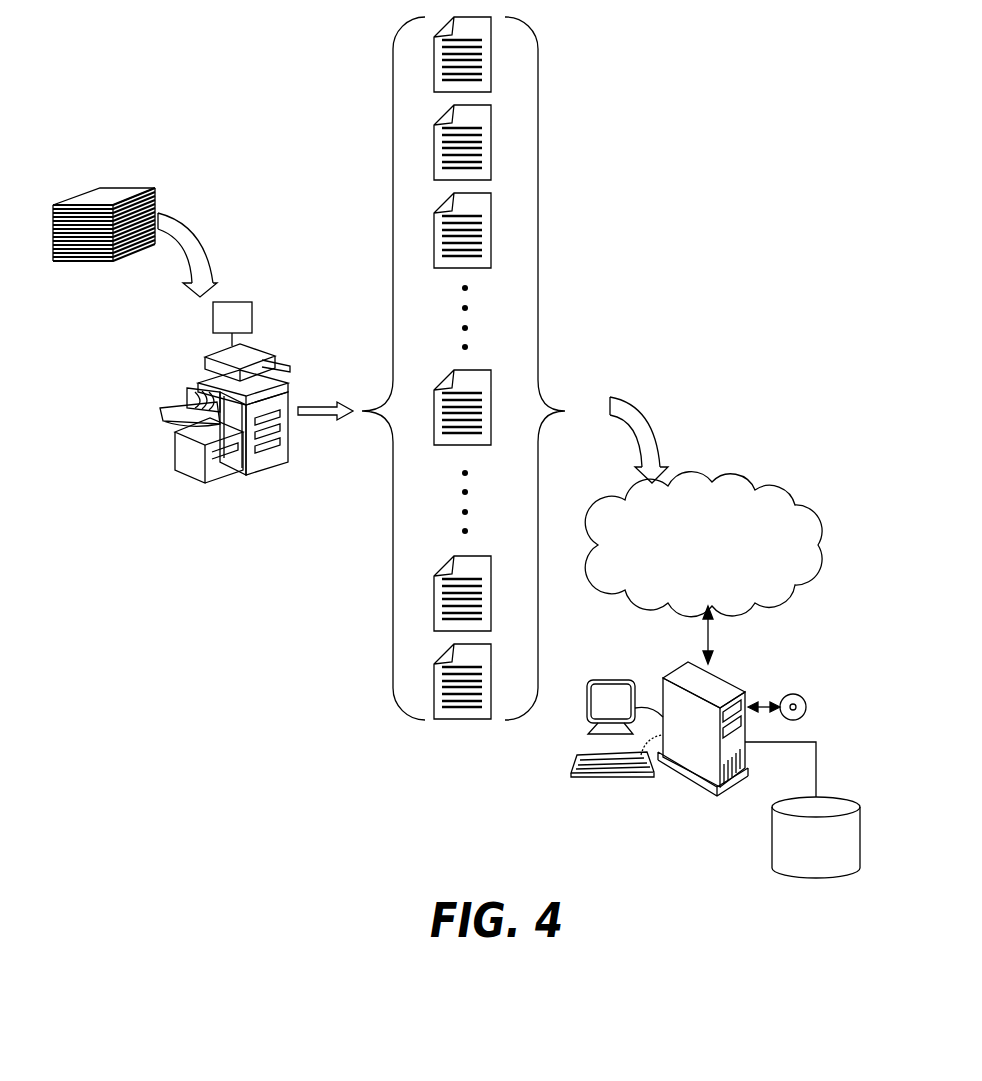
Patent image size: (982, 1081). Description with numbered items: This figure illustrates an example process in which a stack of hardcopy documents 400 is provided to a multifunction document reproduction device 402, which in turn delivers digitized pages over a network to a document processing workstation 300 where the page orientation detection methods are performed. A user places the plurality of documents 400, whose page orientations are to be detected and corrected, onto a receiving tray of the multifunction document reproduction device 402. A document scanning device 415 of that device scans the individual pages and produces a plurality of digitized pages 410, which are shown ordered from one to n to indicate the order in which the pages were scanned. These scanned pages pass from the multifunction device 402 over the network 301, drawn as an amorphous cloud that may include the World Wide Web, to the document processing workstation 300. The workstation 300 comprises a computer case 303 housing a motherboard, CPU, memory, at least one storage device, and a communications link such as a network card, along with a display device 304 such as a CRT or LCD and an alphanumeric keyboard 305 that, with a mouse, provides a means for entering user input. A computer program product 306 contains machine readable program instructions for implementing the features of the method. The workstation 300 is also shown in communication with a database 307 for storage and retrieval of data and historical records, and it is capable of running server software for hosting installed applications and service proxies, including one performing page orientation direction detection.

The plurality of documents 400 is at (137, 179).
The multifunction document reproduction device 402 is at (232, 378).
The document scanning device 415 is at (203, 380).
The plurality of digitized pages 410 is at (563, 411).
The document processing workstation 300 is at (803, 670).
The network 301 is at (818, 545).
The computer case 303 is at (722, 677).
The display device 304 is at (611, 680).
The alphanumeric keyboard 305 is at (612, 778).
The computer program product 306 is at (804, 714).
The database 307 is at (772, 838).